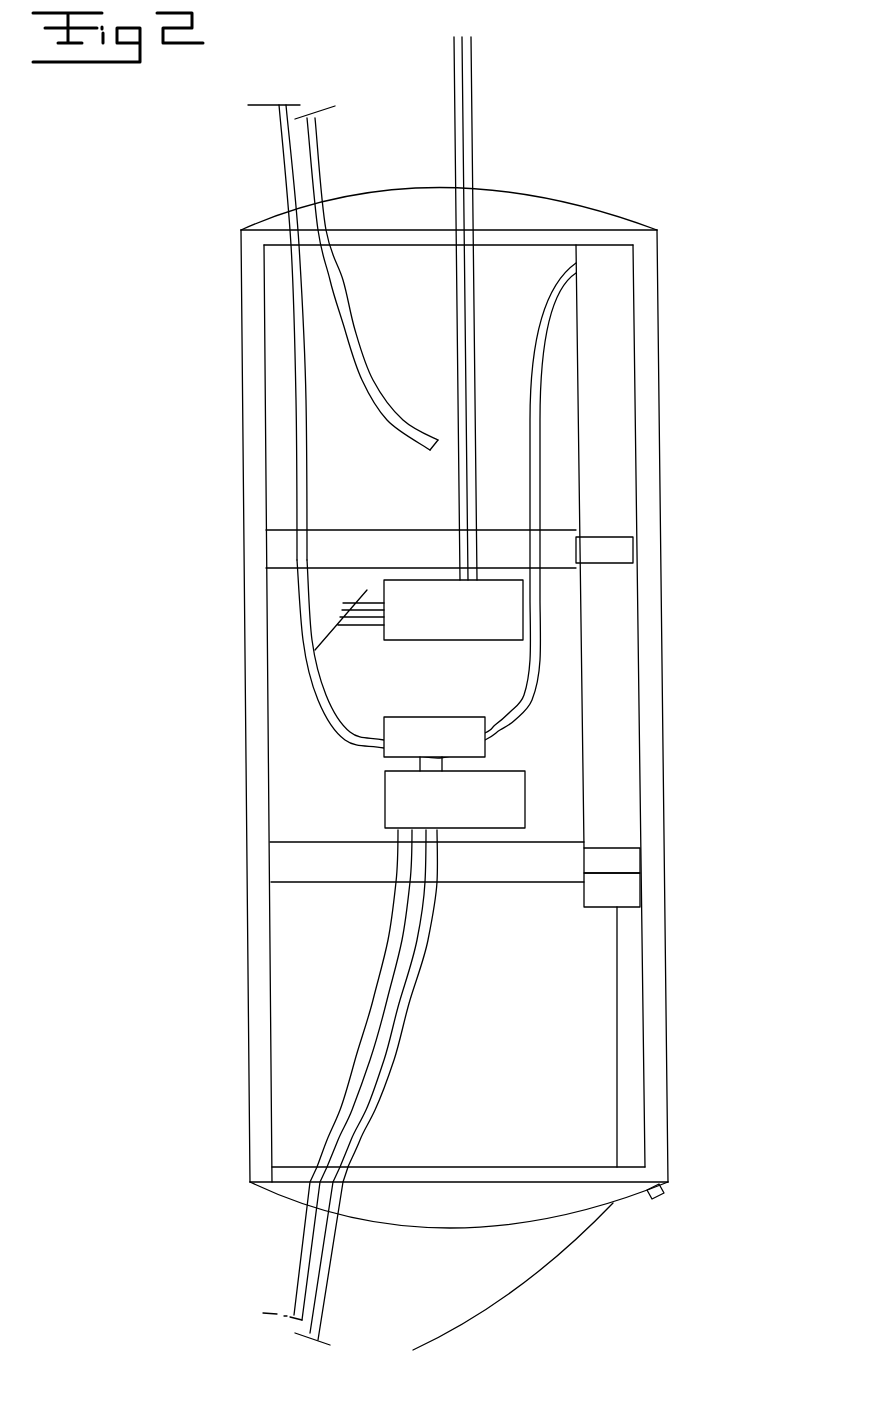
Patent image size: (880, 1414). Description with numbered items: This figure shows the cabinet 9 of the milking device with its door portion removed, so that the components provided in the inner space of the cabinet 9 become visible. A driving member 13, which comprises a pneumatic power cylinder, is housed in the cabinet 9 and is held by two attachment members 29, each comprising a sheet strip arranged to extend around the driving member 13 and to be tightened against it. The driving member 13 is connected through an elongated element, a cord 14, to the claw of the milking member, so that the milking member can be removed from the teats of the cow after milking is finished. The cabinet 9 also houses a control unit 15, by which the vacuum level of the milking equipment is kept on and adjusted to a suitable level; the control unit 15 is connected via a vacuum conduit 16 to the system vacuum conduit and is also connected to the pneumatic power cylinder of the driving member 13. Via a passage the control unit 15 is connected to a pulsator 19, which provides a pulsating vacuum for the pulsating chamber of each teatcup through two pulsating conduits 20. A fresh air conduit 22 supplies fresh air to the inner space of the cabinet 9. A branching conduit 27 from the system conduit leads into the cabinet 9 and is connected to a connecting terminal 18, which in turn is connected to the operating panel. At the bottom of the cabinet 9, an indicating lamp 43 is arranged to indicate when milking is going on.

The cabinet 9 is at (203, 299).
The driving member 13 is at (615, 723).
The cord 14 is at (565, 1260).
The control unit 15 is at (435, 717).
The vacuum conduit 16 is at (308, 485).
The connecting terminal 18 is at (400, 639).
The pulsator 19 is at (407, 785).
The pulsating conduits 20 is at (407, 987).
The fresh air conduit 22 is at (353, 333).
The branching conduit 27 is at (458, 153).
The attachment members 29 is at (620, 548).
The indicating lamp 43 is at (662, 1195).